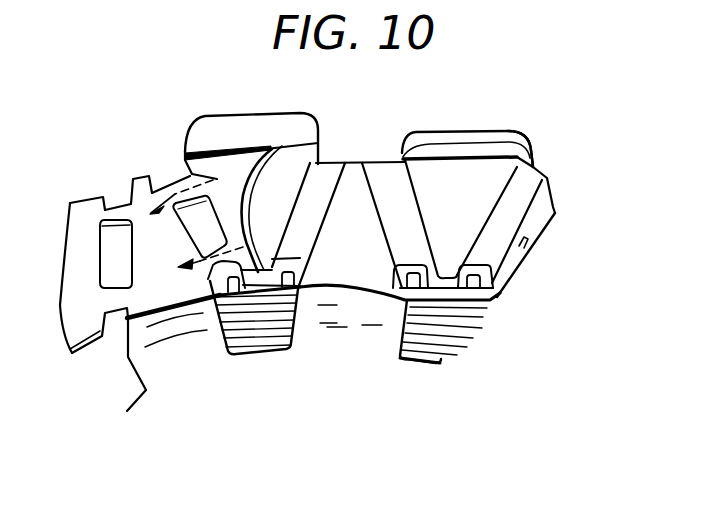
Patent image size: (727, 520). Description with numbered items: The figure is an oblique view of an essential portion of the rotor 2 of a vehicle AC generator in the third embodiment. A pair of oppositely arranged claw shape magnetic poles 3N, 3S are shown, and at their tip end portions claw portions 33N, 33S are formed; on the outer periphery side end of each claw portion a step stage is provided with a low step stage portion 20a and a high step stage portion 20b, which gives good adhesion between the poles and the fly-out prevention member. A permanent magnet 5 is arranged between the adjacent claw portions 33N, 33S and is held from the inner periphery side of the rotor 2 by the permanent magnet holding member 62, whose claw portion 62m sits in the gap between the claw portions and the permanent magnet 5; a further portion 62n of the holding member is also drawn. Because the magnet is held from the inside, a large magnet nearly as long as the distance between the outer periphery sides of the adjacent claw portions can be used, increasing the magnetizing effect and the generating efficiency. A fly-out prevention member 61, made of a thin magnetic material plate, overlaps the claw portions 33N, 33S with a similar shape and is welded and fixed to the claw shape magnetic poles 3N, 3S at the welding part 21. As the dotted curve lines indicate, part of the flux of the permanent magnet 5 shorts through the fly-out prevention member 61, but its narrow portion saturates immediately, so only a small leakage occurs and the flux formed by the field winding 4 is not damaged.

The rotor 2 is at (411, 406).
The field winding 4 is at (440, 330).
The permanent magnet 5 is at (323, 167).
The welding part 21 is at (232, 148).
The fly-out prevention member 61 is at (96, 200).
The claw shape magnetic pole 3N is at (413, 133).
The claw portion 33N is at (477, 133).
The claw shape magnetic pole 3S is at (327, 313).
The claw portion 33S is at (375, 277).
The low step stage portion 20a is at (491, 184).
The high step stage portion 20b is at (515, 145).
The permanent magnet holding member 62 is at (502, 302).
The claw portion 62m is at (530, 248).
The stator core laminations 62n is at (472, 287).